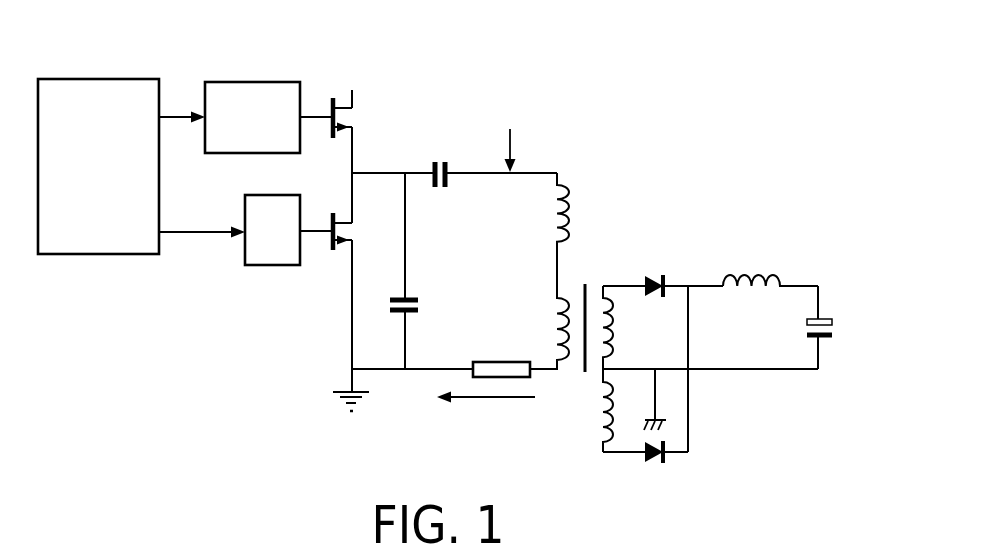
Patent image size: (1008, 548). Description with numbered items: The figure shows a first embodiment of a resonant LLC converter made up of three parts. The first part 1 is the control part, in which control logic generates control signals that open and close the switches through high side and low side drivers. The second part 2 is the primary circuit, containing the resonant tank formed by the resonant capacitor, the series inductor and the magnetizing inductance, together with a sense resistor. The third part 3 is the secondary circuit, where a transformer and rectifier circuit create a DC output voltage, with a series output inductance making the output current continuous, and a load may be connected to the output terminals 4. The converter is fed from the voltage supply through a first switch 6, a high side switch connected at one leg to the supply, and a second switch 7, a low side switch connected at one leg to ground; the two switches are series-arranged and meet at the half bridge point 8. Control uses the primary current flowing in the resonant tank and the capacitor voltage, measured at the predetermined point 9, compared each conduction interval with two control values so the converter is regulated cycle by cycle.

The first part 1 is at (170, 313).
The second part 2 is at (511, 67).
The third part 3 is at (769, 203).
The output terminals 4 is at (833, 322).
The first switch 6 is at (336, 113).
The second switch 7 is at (336, 227).
The half bridge point 8 is at (354, 171).
The predetermined point 9 is at (500, 176).